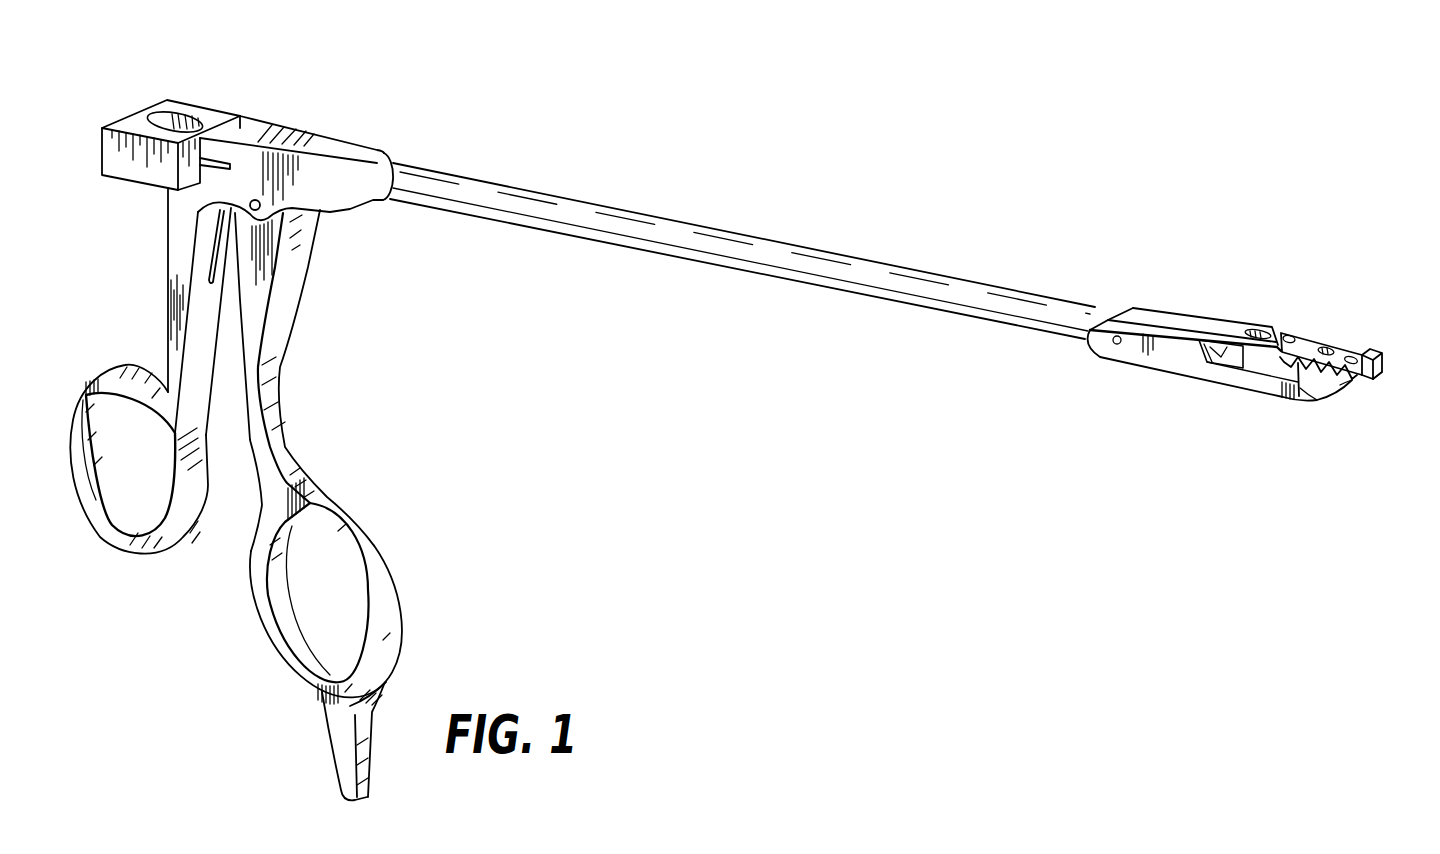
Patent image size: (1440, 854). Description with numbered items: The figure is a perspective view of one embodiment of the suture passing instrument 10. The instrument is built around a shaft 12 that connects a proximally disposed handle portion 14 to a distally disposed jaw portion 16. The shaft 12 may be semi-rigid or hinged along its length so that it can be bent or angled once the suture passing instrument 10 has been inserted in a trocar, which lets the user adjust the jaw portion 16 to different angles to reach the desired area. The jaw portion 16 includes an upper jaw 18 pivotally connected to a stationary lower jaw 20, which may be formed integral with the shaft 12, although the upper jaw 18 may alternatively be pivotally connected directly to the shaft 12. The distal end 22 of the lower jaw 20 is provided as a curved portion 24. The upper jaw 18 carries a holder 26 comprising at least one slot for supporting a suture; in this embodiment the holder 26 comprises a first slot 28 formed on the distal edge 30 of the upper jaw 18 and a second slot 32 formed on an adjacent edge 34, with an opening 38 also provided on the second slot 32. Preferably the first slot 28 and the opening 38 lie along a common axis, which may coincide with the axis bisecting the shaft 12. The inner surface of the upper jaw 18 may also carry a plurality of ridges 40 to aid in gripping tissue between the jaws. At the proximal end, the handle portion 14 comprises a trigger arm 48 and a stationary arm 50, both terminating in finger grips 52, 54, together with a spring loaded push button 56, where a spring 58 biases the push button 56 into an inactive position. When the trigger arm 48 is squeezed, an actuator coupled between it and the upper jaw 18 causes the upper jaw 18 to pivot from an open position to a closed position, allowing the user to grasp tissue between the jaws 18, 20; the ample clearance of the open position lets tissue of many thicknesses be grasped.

The suture passing instrument 10 is at (651, 193).
The shaft 12 is at (760, 248).
The handle portion 14 is at (170, 626).
The jaw portion 16 is at (1190, 420).
The upper jaw 18 is at (1170, 308).
The lower jaw 20 is at (1163, 353).
The distal end 22 is at (1351, 393).
The curved portion 24 is at (1336, 397).
The holder 26 is at (1290, 313).
The first slot 28 is at (1363, 357).
The distal edge 30 is at (1378, 386).
The second slot 32 is at (1279, 336).
The adjacent edge 34 is at (1252, 320).
The opening 38 is at (1333, 345).
The ridges 40 is at (1320, 364).
The trigger arm 48 is at (284, 296).
The stationary arm 50 is at (181, 268).
The finger grip 52 is at (279, 607).
The finger grip 54 is at (132, 518).
The push button 56 is at (138, 118).
The spring 58 is at (190, 122).